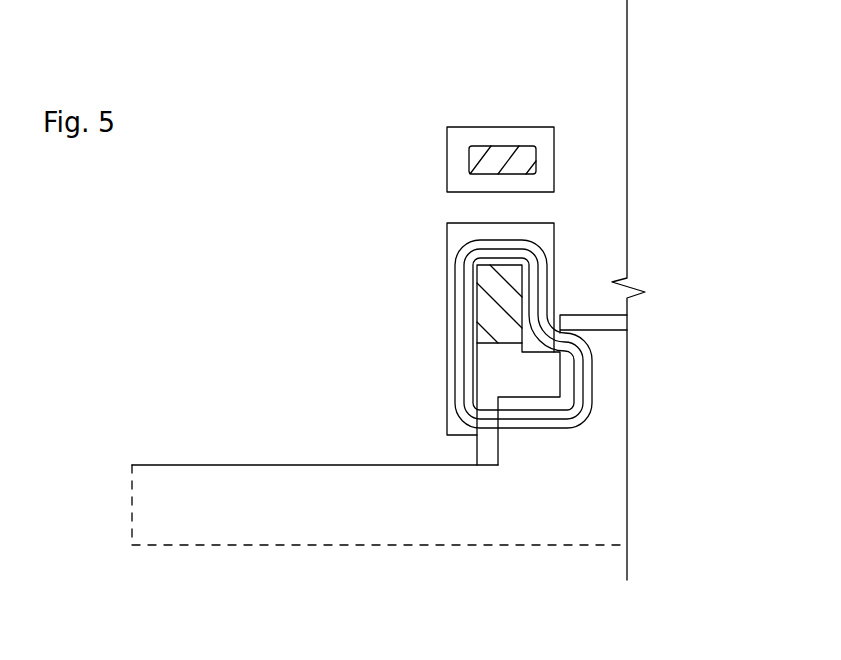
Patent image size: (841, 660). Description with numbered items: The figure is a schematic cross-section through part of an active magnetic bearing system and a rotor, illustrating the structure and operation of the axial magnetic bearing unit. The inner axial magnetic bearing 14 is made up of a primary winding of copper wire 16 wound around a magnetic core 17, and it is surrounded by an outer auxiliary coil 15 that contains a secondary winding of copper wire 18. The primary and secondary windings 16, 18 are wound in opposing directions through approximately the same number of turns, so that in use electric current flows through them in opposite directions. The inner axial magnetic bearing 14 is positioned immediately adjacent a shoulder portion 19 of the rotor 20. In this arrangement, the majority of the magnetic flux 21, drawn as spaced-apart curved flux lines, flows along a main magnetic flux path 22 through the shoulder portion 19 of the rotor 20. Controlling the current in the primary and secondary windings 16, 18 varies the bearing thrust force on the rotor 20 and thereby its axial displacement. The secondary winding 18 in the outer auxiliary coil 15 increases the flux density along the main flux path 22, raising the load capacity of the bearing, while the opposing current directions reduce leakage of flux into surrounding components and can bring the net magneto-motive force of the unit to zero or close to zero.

The inner axial magnetic bearing 14 is at (333, 306).
The outer auxiliary coil 15 is at (447, 150).
The primary winding of copper wire 16 is at (528, 273).
The magnetic core 17 is at (495, 388).
The secondary winding of copper wire 18 is at (495, 147).
The shoulder portion 19 is at (605, 368).
The rotor 20 is at (477, 522).
The magnetic flux 21 is at (452, 342).
The main magnetic flux path 22 is at (570, 350).